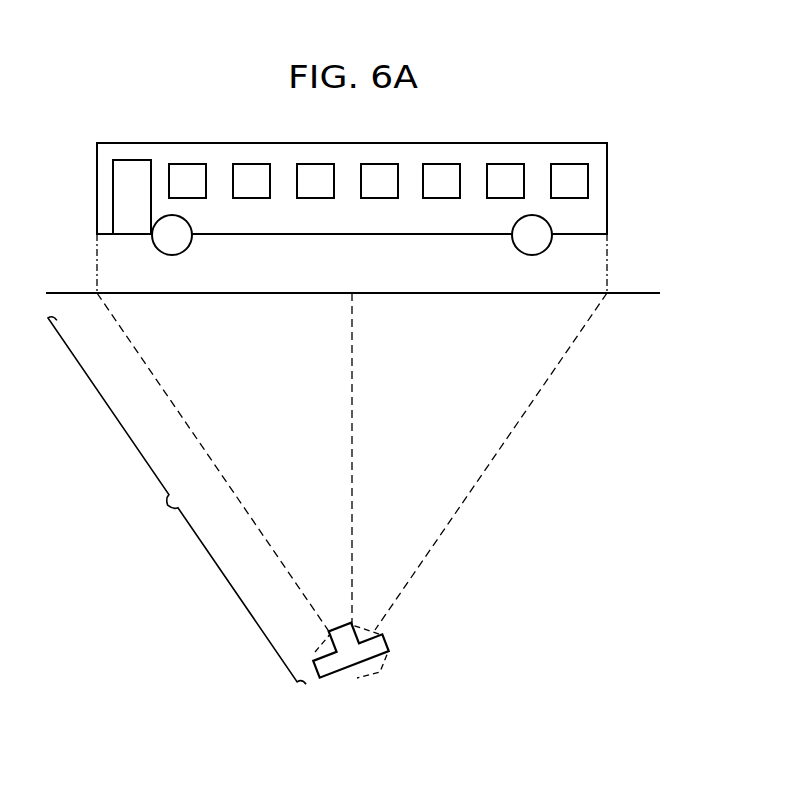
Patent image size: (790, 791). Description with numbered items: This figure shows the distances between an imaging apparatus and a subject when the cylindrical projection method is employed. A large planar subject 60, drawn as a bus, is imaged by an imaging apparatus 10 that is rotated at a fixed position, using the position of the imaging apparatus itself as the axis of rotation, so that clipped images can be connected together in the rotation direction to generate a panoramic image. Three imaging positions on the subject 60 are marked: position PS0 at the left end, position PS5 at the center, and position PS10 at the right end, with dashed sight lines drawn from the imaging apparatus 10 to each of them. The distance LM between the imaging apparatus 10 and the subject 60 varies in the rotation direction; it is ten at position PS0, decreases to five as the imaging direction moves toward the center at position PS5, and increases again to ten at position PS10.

The subject 60 is at (560, 143).
The imaging apparatus 10 is at (357, 668).
The position PS0 is at (97, 293).
The position PS5 is at (352, 293).
The position PS10 is at (607, 293).
The distance LM is at (174, 503).